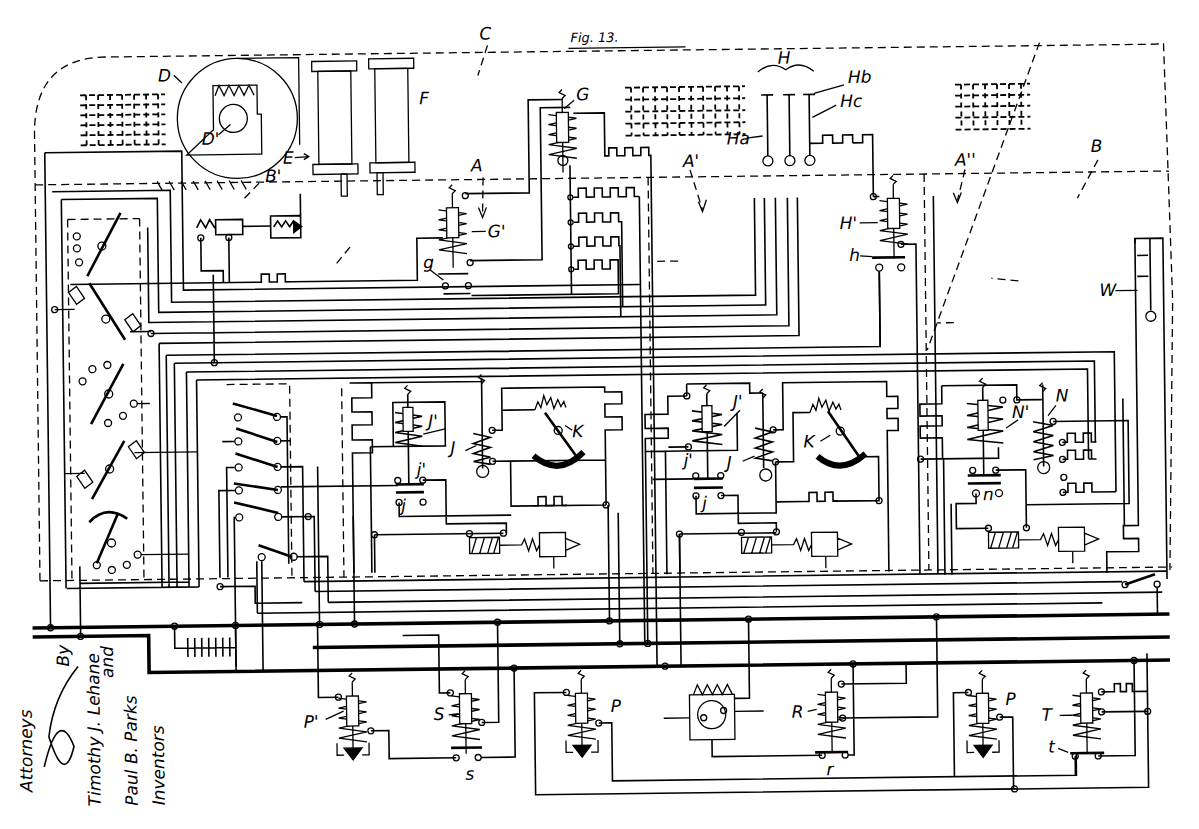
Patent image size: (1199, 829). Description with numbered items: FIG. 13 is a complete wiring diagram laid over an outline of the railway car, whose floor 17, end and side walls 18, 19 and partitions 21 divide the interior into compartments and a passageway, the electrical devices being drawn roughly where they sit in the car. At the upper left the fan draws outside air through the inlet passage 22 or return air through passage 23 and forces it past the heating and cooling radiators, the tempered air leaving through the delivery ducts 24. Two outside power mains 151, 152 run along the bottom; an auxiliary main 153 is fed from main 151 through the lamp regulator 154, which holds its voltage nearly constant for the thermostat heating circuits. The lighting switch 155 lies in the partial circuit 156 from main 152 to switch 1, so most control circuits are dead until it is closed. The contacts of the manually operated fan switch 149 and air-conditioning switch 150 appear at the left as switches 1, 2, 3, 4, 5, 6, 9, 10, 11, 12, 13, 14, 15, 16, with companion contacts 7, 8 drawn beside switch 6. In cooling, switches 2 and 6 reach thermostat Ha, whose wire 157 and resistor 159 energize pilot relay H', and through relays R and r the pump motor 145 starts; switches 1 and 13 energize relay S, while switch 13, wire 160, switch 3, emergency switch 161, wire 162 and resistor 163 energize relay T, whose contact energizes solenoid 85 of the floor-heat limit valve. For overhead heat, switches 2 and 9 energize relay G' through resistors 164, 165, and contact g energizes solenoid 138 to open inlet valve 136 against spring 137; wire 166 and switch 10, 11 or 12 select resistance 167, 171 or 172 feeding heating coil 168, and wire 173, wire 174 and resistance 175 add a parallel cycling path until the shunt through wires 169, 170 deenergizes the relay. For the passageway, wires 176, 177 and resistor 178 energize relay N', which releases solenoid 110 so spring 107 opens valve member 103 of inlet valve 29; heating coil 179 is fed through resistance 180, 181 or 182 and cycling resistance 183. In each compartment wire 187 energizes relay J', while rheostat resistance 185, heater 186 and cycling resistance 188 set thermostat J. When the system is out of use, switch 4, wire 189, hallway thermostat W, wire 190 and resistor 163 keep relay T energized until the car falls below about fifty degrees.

The switch 1 is at (257, 405).
The switch 2 is at (282, 433).
The switch 3 is at (274, 535).
The switch 4 is at (309, 522).
The switch 5 is at (296, 578).
The switch 6 is at (98, 245).
The contact 7 is at (84, 242).
The contact 8 is at (82, 228).
The switch 9 is at (101, 311).
The switch 10 is at (100, 404).
The switch 11 is at (115, 409).
The switch 12 is at (114, 384).
The switch 13 is at (104, 470).
The switch 14 is at (111, 560).
The switch 15 is at (110, 537).
The switch 16 is at (140, 546).
The floor 17 is at (692, 572).
The end wall 18 is at (32, 237).
The side wall 19 is at (997, 280).
The partition 21 is at (655, 276).
The inlet passage 22 is at (116, 98).
The return air passage 23 is at (166, 178).
The delivery duct 24 is at (980, 92).
The inlet valve 29 is at (1060, 538).
The solenoid 85 is at (990, 702).
The movable valve member 103 is at (1092, 544).
The compression spring 107 is at (1036, 542).
The solenoid 110 is at (1035, 553).
The inlet valve 136 is at (288, 212).
The spring 137 is at (250, 242).
The solenoid 138 is at (218, 215).
The motor 145 is at (720, 732).
The fan switch 149 is at (282, 412).
The air-conditioning switch 150 is at (75, 259).
The power main 151 is at (1020, 620).
The power main 152 is at (1018, 664).
The auxiliary main 153 is at (1020, 642).
The lamp regulator 154 is at (218, 660).
The lighting switch 155 is at (293, 607).
The partial circuit 156 is at (262, 600).
The wire 157 is at (824, 144).
The resistor 159 is at (870, 142).
The wire 160 is at (216, 584).
The emergency switch 161 is at (1147, 595).
The wire 162 is at (1150, 690).
The resistor 163 is at (1117, 688).
The resistor 164 is at (280, 270).
The resistor 165 is at (365, 478).
The wire 166 is at (235, 430).
The resistance 167 is at (596, 196).
The heating coil 168 is at (575, 133).
The wire 169 is at (514, 146).
The wire 170 is at (544, 207).
The resistance 171 is at (599, 220).
The resistance 172 is at (599, 244).
The wire 173 is at (358, 292).
The wire 174 is at (540, 293).
The resistance 175 is at (544, 278).
The wire 176 is at (710, 627).
The wire 177 is at (974, 515).
The resistor 178 is at (958, 409).
The heating coil 179 is at (1040, 457).
The resistance 180 is at (1060, 470).
The resistance 181 is at (1060, 500).
The resistance 182 is at (1116, 510).
The cycling resistance 183 is at (1077, 434).
The resistance 185 is at (838, 414).
The heater 186 is at (752, 445).
The wire 187 is at (676, 664).
The cycling resistance 188 is at (810, 503).
The wire 189 is at (388, 574).
The wire 190 is at (1163, 247).